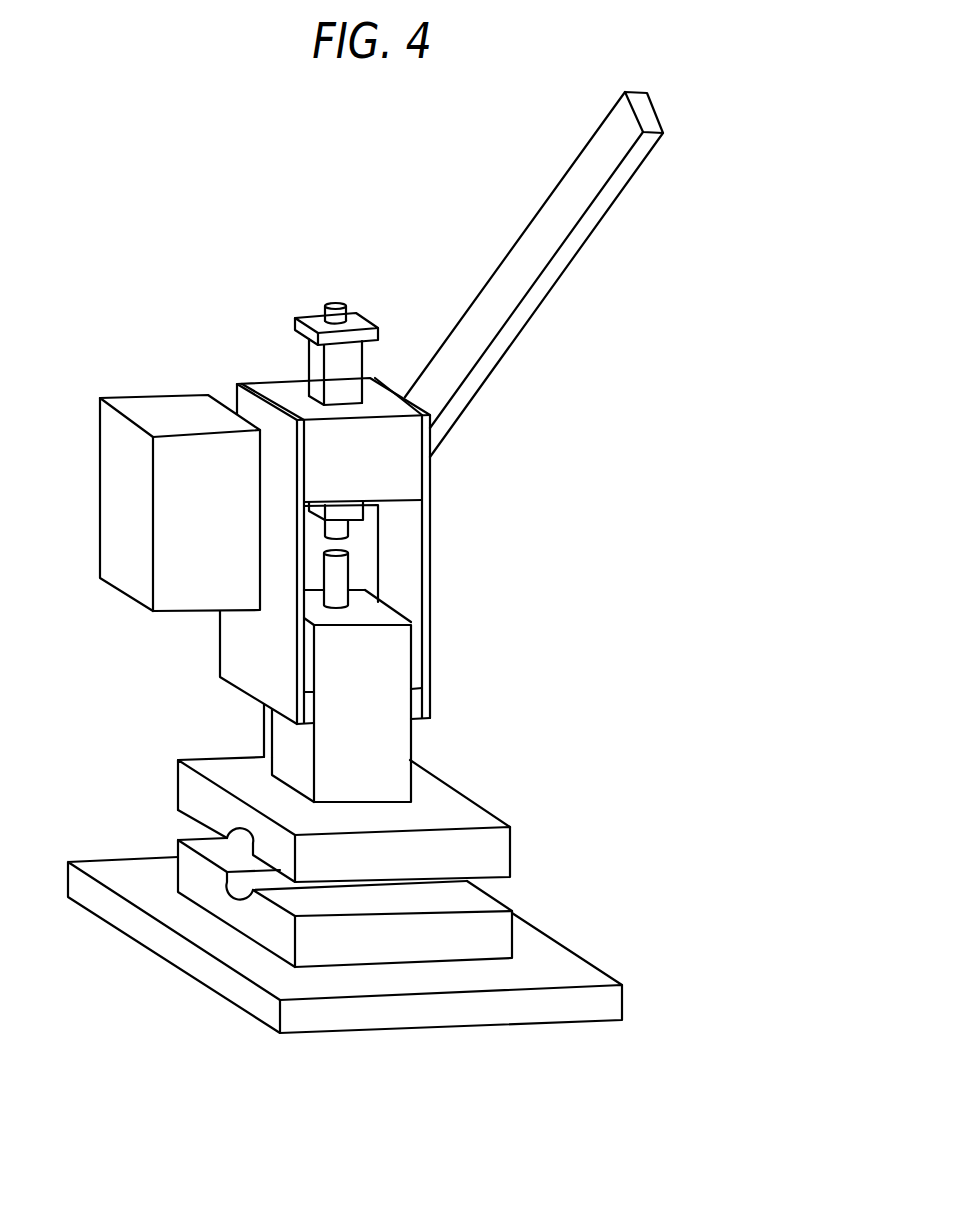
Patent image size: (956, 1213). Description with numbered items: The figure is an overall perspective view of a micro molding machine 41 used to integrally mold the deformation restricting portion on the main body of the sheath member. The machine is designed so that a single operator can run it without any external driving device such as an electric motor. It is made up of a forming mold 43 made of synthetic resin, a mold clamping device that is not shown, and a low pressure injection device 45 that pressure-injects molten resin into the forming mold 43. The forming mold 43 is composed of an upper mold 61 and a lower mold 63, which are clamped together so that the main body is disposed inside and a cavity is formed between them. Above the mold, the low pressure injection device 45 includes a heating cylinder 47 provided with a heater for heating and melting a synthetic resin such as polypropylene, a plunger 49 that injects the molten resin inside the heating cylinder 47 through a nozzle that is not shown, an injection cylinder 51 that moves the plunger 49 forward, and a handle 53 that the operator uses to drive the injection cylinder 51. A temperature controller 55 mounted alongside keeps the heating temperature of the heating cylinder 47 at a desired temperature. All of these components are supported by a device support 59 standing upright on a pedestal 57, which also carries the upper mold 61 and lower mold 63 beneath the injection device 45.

The micro molding machine 41 is at (351, 586).
The forming mold 43 is at (349, 919).
The low pressure injection device 45 is at (370, 551).
The heating cylinder 47 is at (381, 696).
The plunger 49 is at (405, 576).
The injection cylinder 51 is at (308, 421).
The handle 53 is at (534, 274).
The temperature controller 55 is at (149, 503).
The pedestal 57 is at (349, 945).
The device support 59 is at (227, 733).
The upper mold 61 is at (345, 914).
The lower mold 63 is at (345, 959).